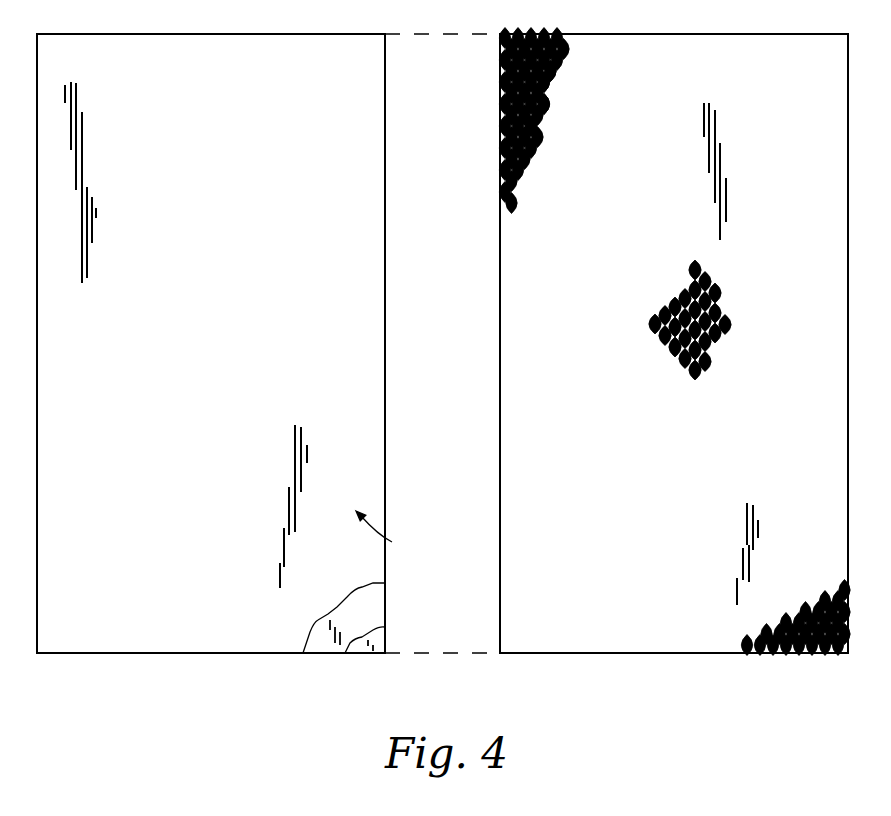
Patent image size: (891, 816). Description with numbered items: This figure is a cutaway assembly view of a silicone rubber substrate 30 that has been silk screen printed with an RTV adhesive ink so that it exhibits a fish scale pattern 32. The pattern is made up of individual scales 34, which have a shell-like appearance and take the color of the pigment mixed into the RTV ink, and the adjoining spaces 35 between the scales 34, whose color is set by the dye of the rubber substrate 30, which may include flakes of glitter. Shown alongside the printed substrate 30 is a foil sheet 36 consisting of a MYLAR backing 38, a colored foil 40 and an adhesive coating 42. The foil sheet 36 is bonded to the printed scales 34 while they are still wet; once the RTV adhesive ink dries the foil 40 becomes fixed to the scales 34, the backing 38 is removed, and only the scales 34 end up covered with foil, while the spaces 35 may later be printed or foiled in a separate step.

The rubber substrate 30 is at (494, 174).
The fish scale pattern 32 is at (500, 68).
The scales 34 is at (540, 107).
The spaces 35 is at (538, 134).
The foil sheet 36 is at (391, 536).
The MYLAR backing 38 is at (372, 569).
The colored foil 40 is at (372, 610).
The adhesive coating 42 is at (385, 655).